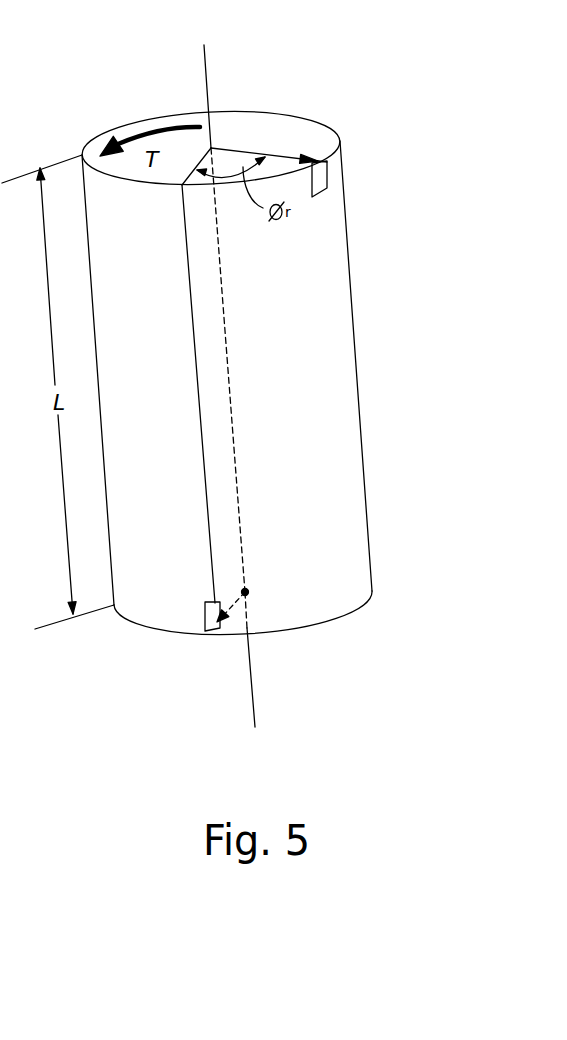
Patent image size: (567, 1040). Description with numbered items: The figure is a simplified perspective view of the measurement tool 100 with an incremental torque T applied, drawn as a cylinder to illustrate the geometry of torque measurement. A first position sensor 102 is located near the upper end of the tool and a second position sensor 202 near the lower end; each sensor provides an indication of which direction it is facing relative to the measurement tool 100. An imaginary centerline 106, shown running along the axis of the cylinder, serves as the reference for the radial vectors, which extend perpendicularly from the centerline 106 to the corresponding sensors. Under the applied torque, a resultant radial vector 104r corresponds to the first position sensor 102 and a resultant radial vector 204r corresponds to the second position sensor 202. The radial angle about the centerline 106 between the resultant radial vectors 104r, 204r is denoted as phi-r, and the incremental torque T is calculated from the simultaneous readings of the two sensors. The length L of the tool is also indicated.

The measurement tool 100 is at (358, 373).
The first position sensor 102 is at (325, 163).
The second position sensor 202 is at (132, 619).
The centerline 106 is at (208, 85).
The resultant radial vector 104r is at (247, 152).
The resultant radial vector 204r is at (245, 592).